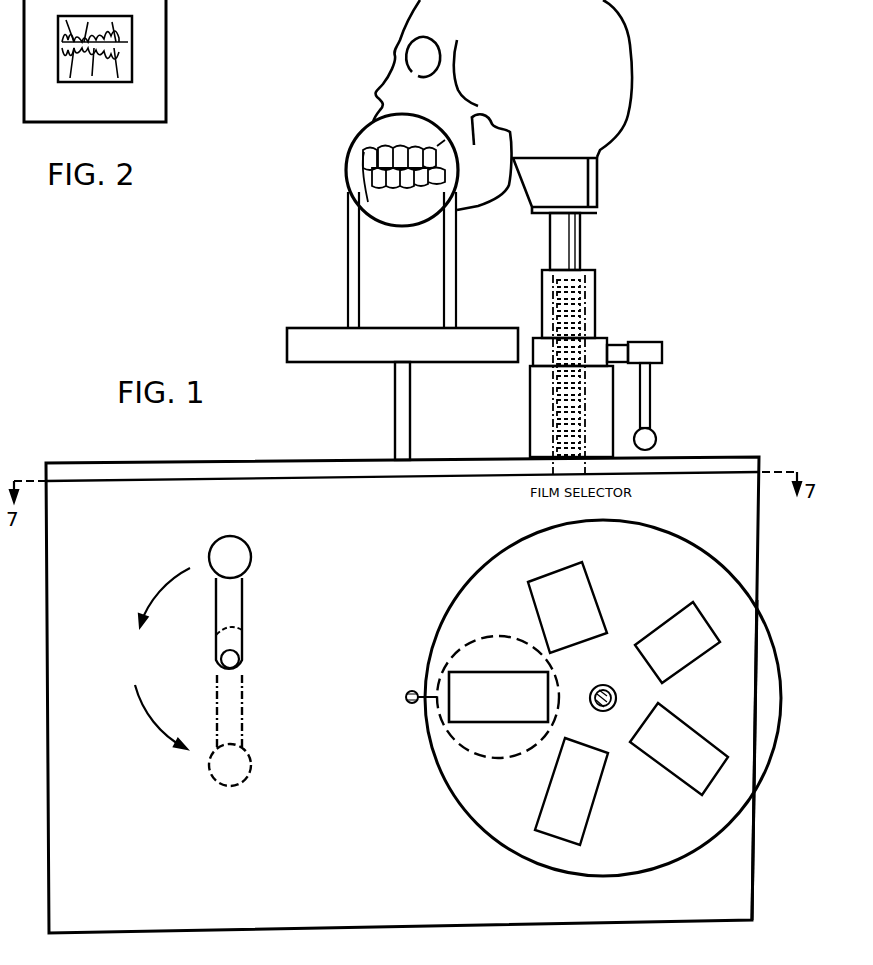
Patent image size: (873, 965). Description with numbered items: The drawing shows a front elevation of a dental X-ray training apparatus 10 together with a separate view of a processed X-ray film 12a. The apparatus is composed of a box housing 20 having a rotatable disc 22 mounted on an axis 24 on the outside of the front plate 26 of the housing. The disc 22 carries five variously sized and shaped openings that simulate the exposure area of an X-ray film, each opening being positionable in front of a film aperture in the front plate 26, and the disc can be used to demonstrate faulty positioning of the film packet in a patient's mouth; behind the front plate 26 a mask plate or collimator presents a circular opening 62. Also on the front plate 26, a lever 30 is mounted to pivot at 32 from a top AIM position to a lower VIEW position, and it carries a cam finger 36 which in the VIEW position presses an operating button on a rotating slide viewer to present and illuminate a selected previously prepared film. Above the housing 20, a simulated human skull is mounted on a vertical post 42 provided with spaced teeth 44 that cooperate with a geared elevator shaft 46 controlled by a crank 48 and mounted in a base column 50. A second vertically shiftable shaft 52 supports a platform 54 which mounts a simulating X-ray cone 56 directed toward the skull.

In FIG. 1, the dental x-ray apparatus centerline 10 is at (403, 458).
In FIG. 2, the film card with teeth image 12a is at (158, 88).
In FIG. 1, the box housing 20 is at (91, 492).
In FIG. 1, the rotatable disc 22 is at (675, 537).
In FIG. 1, the axis 24 is at (614, 683).
In FIG. 1, the front plate 26 is at (760, 852).
In FIG. 1, the lever 30 is at (240, 593).
In FIG. 1, the pivot 32 is at (239, 657).
In FIG. 1, the cam finger 36 is at (242, 628).
In FIG. 1, the vertical post 42 is at (580, 240).
In FIG. 1, the spaced teeth 44 is at (585, 318).
In FIG. 1, the geared elevator shaft 46 is at (613, 345).
In FIG. 1, the crank 48 is at (652, 385).
In FIG. 1, the base column 50 is at (530, 413).
In FIG. 1, the second vertically shiftable shaft 52 is at (410, 390).
In FIG. 1, the platform 54 is at (310, 336).
In FIG. 1, the simulating X-ray cone 56 is at (351, 197).
In FIG. 1, the circular opening 62 is at (456, 742).